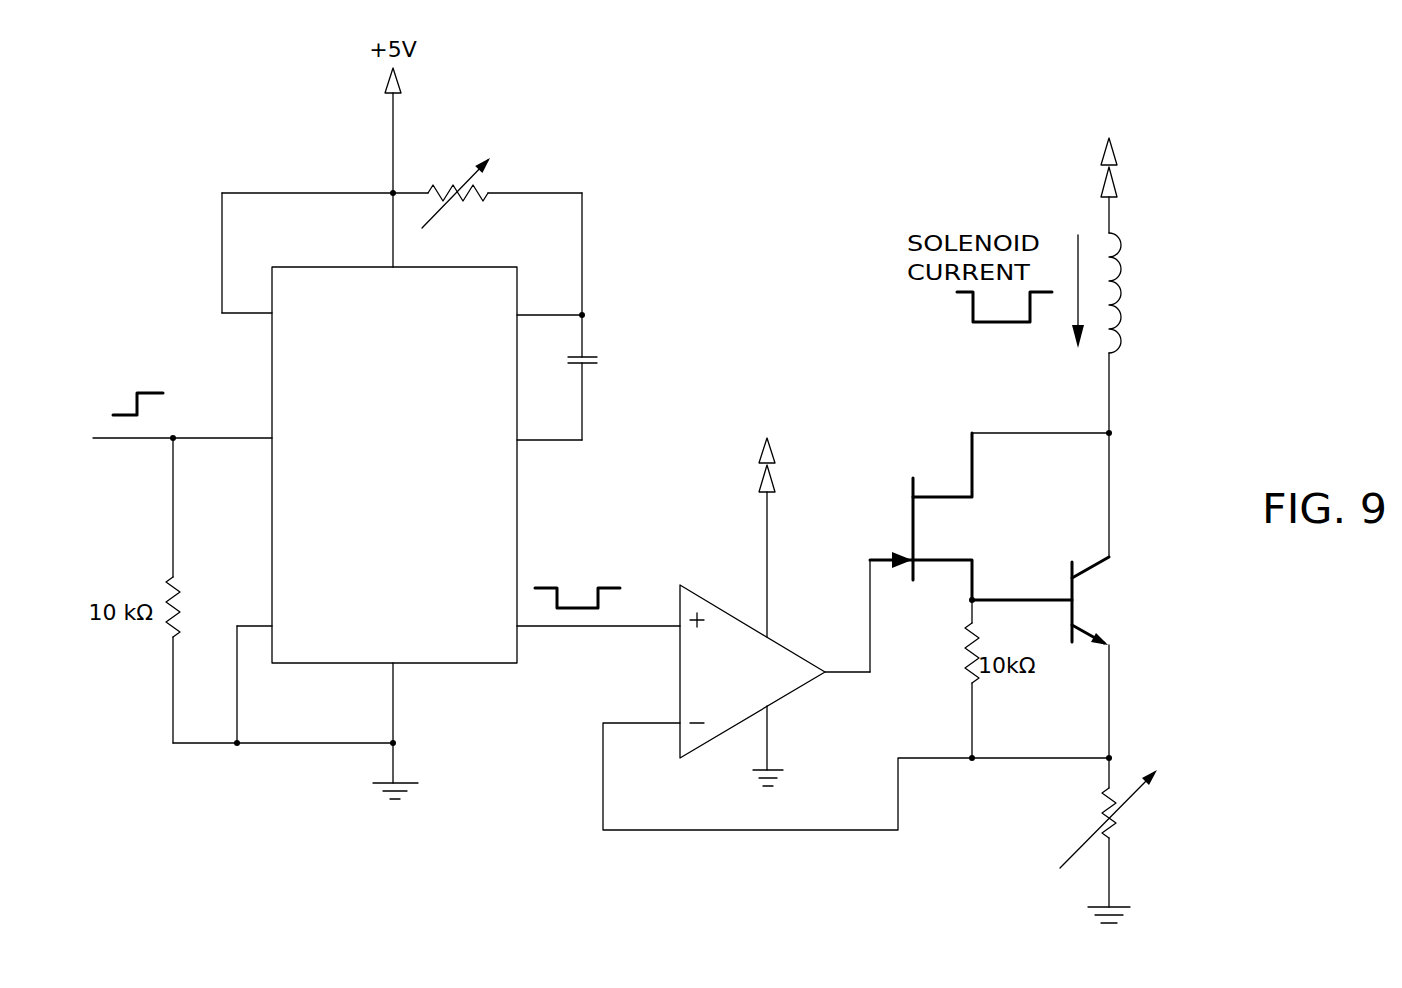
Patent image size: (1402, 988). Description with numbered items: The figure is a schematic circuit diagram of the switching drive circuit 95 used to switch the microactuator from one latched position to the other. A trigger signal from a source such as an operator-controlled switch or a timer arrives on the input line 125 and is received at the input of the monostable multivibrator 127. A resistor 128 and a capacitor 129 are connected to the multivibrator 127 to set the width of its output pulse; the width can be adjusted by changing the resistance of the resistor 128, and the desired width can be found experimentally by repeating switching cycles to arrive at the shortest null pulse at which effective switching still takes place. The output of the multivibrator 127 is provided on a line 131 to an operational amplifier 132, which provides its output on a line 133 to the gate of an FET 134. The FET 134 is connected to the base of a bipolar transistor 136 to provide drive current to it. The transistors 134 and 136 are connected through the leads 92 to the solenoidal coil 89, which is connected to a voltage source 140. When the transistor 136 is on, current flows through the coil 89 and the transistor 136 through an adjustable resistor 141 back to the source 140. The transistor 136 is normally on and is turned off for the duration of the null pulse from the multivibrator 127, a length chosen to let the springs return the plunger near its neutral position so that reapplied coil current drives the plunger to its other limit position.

The solenoidal coil 89 is at (1123, 313).
The leads 92 is at (1109, 213).
The drive circuit 95 is at (347, 176).
The input line 125 is at (152, 434).
The monostable multivibrator 127 is at (517, 525).
The resistor 128 is at (492, 173).
The capacitor 129 is at (585, 348).
The line 131 is at (627, 627).
The operational amplifier 132 is at (783, 640).
The line 133 is at (870, 640).
The FET 134 is at (900, 517).
The bipolar transistor 136 is at (1077, 585).
The voltage source 140 is at (1100, 188).
The adjustable resistor 141 is at (1100, 789).